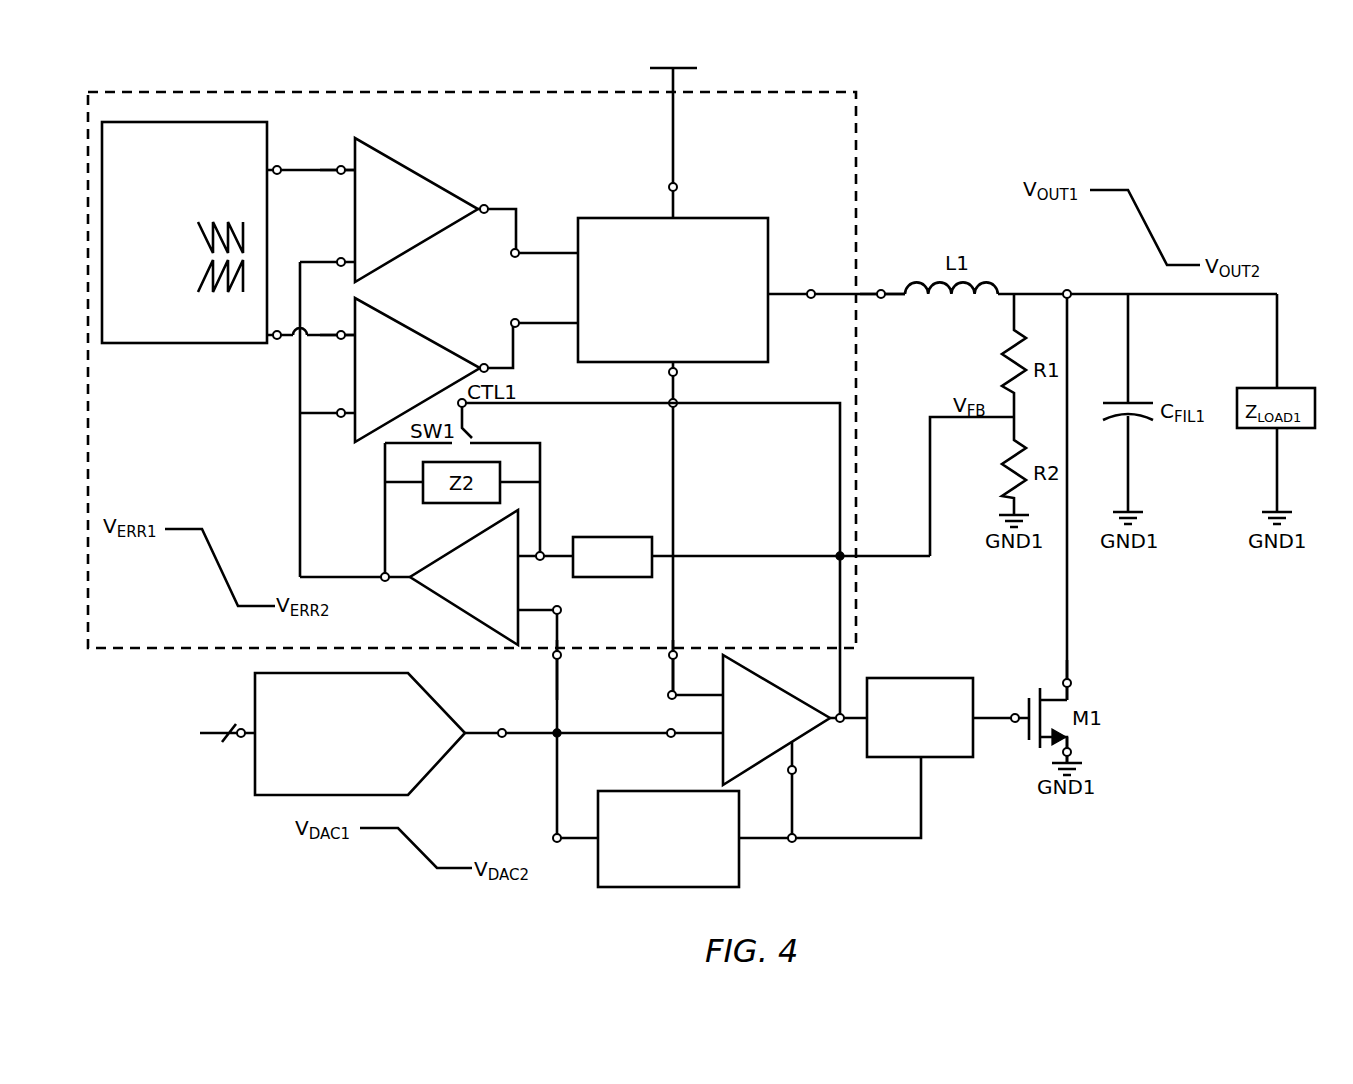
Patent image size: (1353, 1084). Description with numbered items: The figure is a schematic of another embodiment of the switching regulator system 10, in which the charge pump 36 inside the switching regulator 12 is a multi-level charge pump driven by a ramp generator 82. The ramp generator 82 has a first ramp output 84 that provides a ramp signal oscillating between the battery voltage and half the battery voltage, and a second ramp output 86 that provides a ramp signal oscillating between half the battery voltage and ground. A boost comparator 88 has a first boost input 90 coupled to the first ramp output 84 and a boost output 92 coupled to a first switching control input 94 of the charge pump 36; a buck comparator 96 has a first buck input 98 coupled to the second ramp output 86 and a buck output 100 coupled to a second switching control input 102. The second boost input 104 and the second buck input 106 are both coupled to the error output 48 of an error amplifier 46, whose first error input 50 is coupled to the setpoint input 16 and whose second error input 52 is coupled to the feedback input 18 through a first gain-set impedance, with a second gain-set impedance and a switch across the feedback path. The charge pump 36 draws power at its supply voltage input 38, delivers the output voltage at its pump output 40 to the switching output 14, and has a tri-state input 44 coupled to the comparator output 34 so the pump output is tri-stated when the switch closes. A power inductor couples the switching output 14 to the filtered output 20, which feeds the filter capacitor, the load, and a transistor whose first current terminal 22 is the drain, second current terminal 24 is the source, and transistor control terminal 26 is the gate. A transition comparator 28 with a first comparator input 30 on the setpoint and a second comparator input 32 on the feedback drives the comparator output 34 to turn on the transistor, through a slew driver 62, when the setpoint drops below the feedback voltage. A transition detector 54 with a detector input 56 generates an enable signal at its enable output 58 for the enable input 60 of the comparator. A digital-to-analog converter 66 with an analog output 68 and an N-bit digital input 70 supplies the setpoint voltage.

The switching regulator system 10 is at (912, 104).
The switching regulator 12 is at (472, 370).
The switching output 14 is at (881, 299).
The setpoint input 16 is at (561, 658).
The feedback input 18 is at (668, 658).
The filtered output 20 is at (1064, 290).
The first current terminal 22 is at (1071, 680).
The second current terminal 24 is at (1071, 753).
The transistor control terminal 26 is at (1012, 714).
The transition comparator 28 is at (783, 688).
The first comparator input 30 is at (668, 737).
The second comparator input 32 is at (668, 698).
The comparator output 34 is at (838, 723).
The charge pump 36 is at (673, 290).
The supply voltage input 38 is at (669, 185).
The pump output 40 is at (813, 289).
The tri-state input 44 is at (676, 408).
The error amplifier 46 is at (465, 545).
The error output 48 is at (387, 582).
The first error input 50 is at (562, 608).
The second error input 52 is at (542, 551).
The transition detector 54 is at (668, 839).
The detector input 56 is at (553, 834).
The enable output 58 is at (790, 843).
The enable input 60 is at (796, 772).
The slew driver 62 is at (920, 717).
The digital-to-analog converter 66 is at (360, 734).
The analog output 68 is at (500, 738).
The digital input 70 is at (238, 738).
The ramp generator 82 is at (184, 232).
The first ramp output 84 is at (279, 175).
The second ramp output 86 is at (277, 340).
The boost comparator 88 is at (417, 170).
The first boost input 90 is at (339, 166).
The boost output 92 is at (486, 204).
The first switching control input 94 is at (518, 248).
The buck comparator 96 is at (395, 325).
The first buck input 98 is at (339, 331).
The buck output 100 is at (482, 363).
The second switching control input 102 is at (512, 319).
The second boost input 104 is at (339, 258).
The second buck input 106 is at (339, 409).